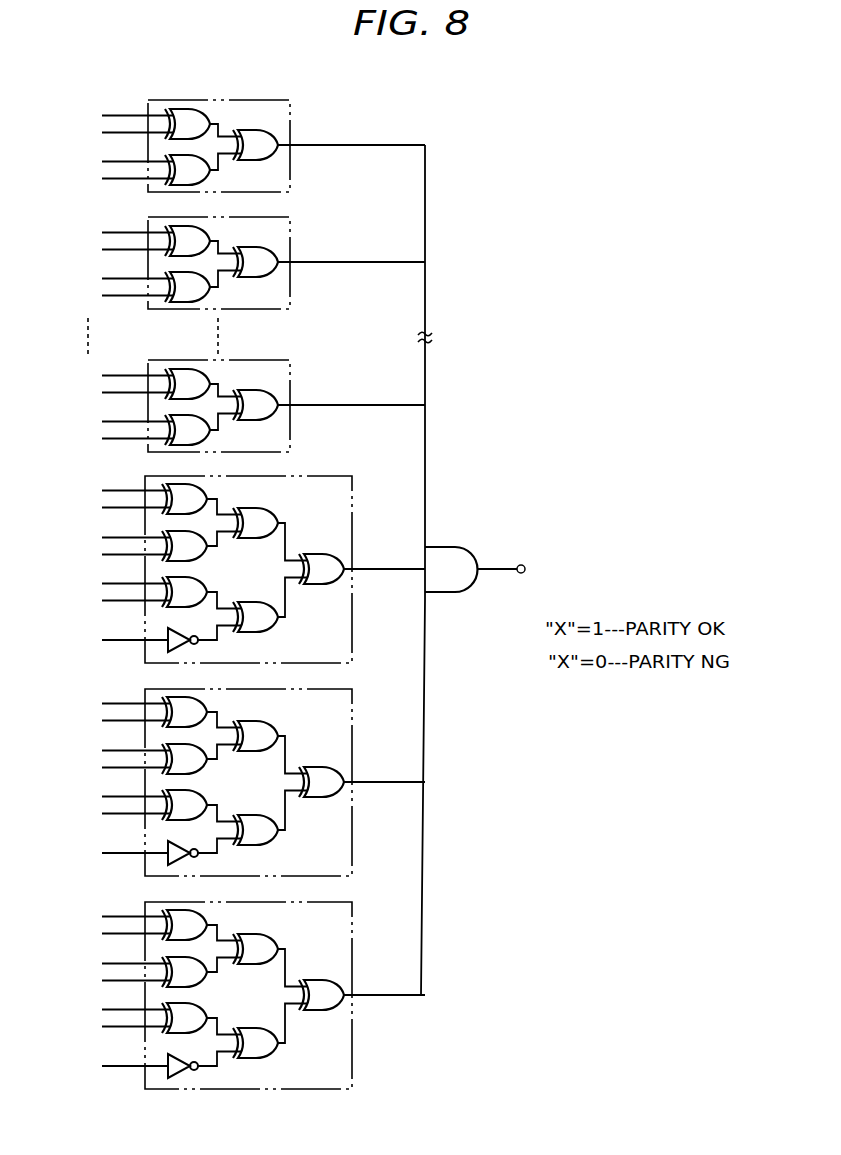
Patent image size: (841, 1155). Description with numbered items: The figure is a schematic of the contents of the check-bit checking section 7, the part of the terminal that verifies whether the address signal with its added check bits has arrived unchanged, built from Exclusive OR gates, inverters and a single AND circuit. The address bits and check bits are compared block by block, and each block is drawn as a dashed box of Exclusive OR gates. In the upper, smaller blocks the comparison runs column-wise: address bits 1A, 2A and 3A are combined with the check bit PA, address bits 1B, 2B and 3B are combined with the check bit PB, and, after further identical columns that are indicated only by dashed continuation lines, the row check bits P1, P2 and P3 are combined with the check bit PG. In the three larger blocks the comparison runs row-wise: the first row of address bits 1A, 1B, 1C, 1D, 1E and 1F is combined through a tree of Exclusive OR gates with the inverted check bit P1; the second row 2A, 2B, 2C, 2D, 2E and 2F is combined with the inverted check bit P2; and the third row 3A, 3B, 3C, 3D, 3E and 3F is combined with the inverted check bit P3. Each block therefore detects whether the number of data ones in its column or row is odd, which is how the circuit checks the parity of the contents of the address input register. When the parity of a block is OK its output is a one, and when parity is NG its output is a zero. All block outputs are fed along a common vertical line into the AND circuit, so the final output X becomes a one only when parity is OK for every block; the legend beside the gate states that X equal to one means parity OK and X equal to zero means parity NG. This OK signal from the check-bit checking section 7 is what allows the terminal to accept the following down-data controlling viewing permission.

The check-bit checking section 7 is at (83, 1077).
The address bit 1A is at (124, 303).
The address bit 2A is at (124, 418).
The address bit 3A is at (124, 539).
The check bit PA is at (124, 180).
The address bit 1B is at (124, 370).
The address bit 2B is at (124, 485).
The address bit 3B is at (124, 606).
The check bit PB is at (124, 297).
The check bit P1 is at (124, 509).
The check bit P2 is at (124, 624).
The check bit P3 is at (124, 745).
The check bit PG is at (124, 440).
The address bit 1C is at (123, 538).
The address bit 1D is at (123, 555).
The address bit 1E is at (123, 584).
The address bit 1F is at (123, 601).
The address bit 2C is at (123, 751).
The address bit 2D is at (123, 768).
The address bit 2E is at (123, 797).
The address bit 2F is at (123, 814).
The address bit 3C is at (123, 964).
The address bit 3D is at (123, 981).
The address bit 3E is at (123, 1010).
The address bit 3F is at (123, 1027).
The output X is at (520, 570).